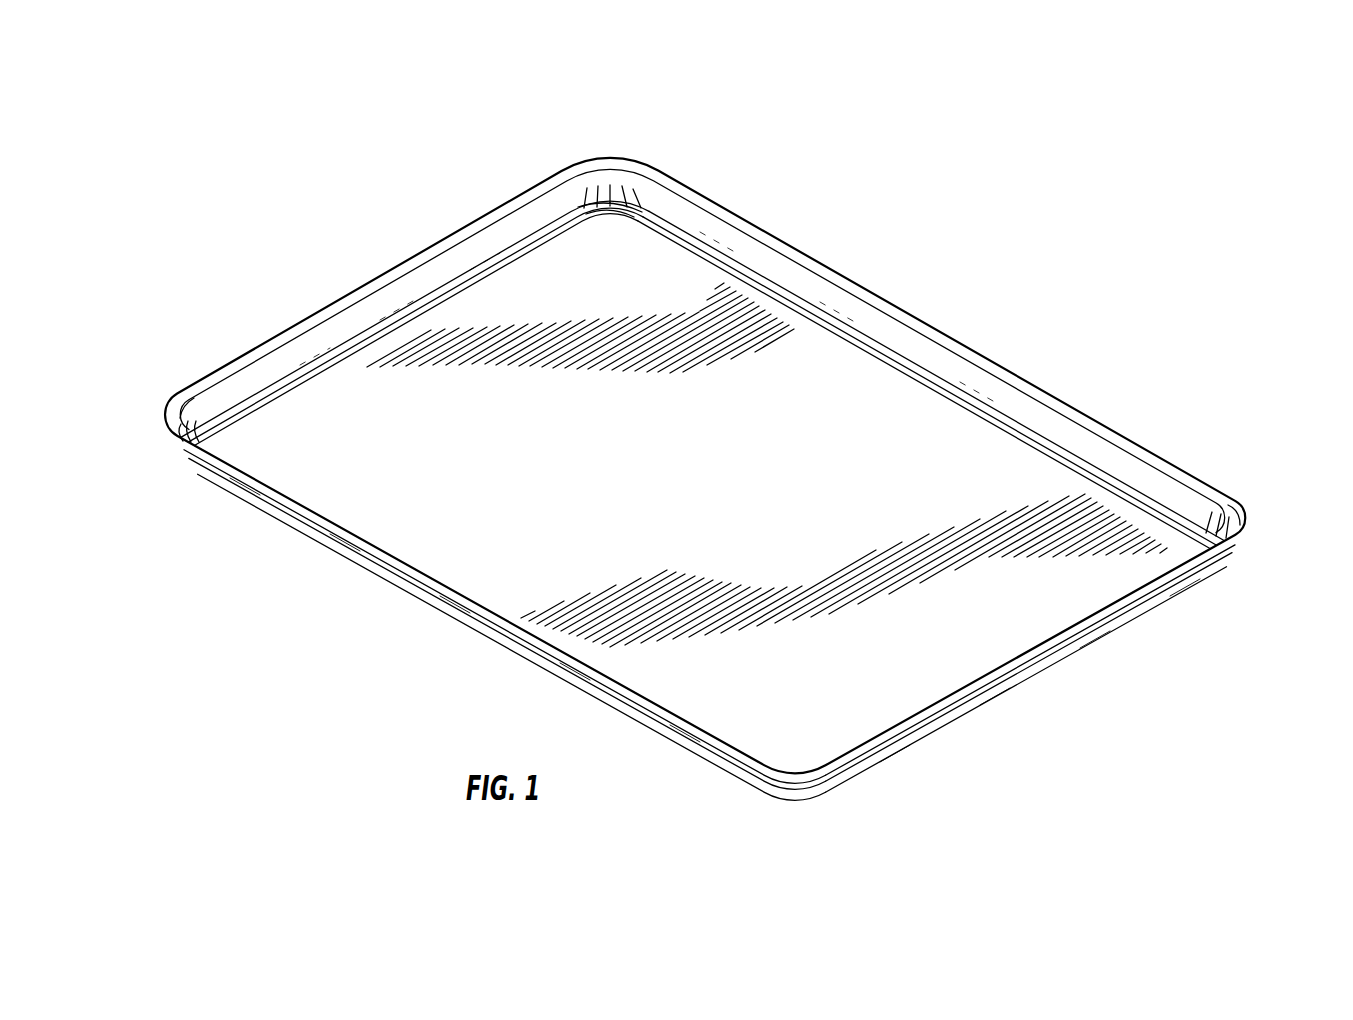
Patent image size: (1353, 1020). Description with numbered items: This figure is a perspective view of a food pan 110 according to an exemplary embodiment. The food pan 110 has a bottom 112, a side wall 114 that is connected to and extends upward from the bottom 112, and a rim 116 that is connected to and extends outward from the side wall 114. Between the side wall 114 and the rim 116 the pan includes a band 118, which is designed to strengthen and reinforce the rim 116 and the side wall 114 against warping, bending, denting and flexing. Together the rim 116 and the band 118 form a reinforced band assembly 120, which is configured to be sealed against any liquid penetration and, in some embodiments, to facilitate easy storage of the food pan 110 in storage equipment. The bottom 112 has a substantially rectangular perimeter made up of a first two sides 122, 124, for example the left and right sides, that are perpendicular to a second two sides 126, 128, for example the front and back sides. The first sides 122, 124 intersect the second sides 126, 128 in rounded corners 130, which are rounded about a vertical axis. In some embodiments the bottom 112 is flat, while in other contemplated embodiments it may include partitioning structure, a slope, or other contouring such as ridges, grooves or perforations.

The food pan 110 is at (1042, 142).
The bottom 112 is at (838, 385).
The side wall 114 is at (1057, 433).
The rim 116 is at (682, 181).
The band 118 is at (166, 428).
The reinforced band assembly 120 is at (1213, 554).
The first side 122 is at (1012, 686).
The first side 124 is at (408, 296).
The second side 126 is at (809, 272).
The second side 128 is at (471, 619).
The rounded corner 130 is at (612, 192).